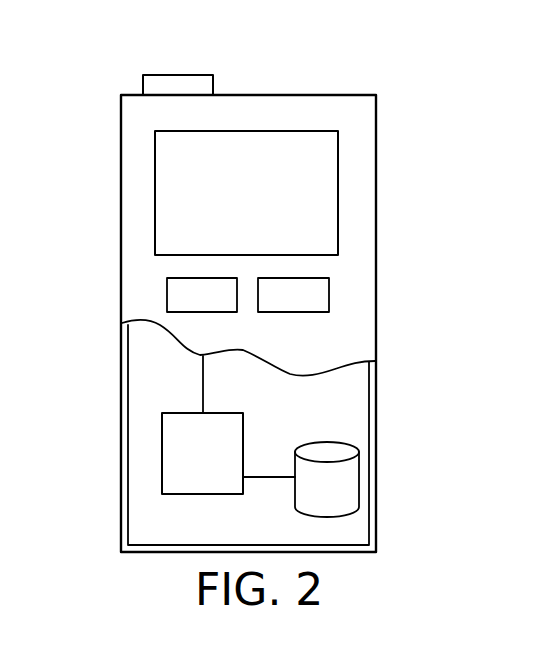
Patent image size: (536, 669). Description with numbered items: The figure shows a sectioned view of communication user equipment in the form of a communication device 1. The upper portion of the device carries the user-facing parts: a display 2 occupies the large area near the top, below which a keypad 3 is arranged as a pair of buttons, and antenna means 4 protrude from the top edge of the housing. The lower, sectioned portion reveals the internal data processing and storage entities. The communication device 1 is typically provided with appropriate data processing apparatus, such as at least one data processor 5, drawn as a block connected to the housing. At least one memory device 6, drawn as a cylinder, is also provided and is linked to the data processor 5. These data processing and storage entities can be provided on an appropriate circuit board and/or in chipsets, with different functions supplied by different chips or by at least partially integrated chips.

The communication device 1 is at (130, 110).
The display 2 is at (328, 144).
The keypad 3 is at (178, 290).
The antenna means 4 is at (195, 88).
The data processor 5 is at (173, 428).
The memory device 6 is at (346, 480).